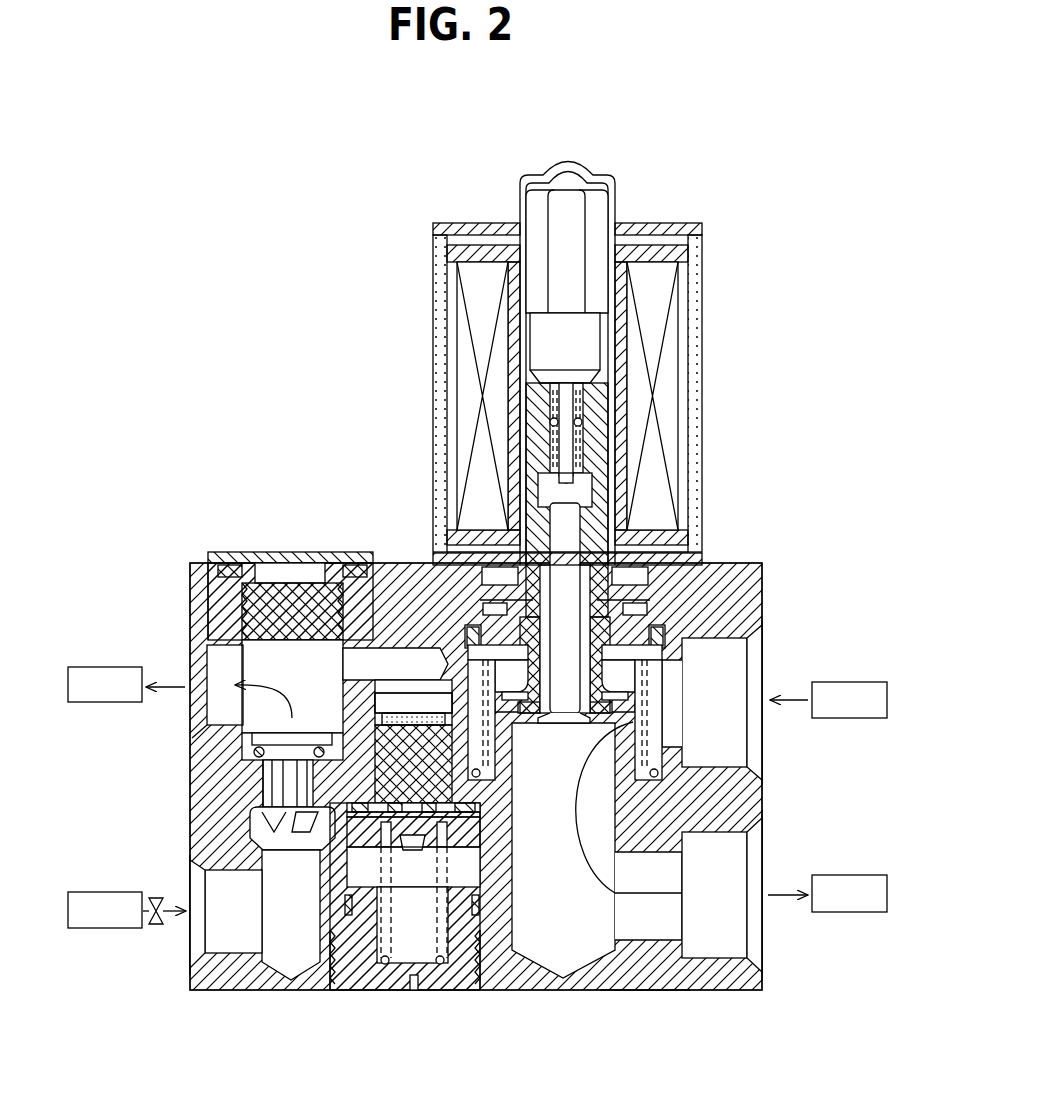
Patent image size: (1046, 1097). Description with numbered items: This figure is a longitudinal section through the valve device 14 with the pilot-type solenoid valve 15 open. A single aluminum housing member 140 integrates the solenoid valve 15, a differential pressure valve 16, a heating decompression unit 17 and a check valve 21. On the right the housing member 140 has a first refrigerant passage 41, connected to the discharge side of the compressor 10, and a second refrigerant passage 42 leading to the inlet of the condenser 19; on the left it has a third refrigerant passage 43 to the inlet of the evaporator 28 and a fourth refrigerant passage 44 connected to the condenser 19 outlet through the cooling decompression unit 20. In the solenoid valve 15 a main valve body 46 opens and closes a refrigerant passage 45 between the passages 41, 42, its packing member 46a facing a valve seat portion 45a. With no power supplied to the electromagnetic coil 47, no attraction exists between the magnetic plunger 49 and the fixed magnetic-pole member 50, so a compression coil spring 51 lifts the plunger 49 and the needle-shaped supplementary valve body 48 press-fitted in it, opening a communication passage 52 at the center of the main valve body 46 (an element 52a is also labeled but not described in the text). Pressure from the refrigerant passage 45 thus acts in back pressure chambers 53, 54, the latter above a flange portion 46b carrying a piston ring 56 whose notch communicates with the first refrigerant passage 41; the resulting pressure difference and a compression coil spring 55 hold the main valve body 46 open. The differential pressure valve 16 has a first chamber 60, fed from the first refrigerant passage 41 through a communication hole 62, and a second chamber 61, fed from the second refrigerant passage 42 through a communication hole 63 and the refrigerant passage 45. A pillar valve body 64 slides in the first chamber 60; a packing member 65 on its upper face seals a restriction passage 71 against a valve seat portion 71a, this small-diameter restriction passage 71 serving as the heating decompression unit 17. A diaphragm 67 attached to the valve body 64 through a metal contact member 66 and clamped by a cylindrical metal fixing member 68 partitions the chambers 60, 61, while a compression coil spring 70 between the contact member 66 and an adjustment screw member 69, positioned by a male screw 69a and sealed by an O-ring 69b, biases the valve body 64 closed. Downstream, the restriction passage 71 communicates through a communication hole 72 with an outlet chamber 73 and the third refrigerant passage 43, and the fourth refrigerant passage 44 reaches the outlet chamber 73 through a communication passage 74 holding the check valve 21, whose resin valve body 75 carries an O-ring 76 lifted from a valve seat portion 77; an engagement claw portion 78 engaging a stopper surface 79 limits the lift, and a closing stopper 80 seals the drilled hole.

The compressor 10 is at (850, 720).
The valve device 14 is at (710, 995).
The pilot-type solenoid valve 15 is at (510, 202).
The differential pressure valve 16 is at (412, 960).
The heating decompression unit 17 is at (395, 568).
The condenser 19 is at (850, 913).
The cooling decompression unit 20 is at (157, 926).
The check valve 21 is at (245, 782).
The evaporator 28 is at (120, 666).
The first refrigerant passage 41 is at (700, 740).
The second refrigerant passage 42 is at (740, 945).
The third refrigerant passage 43 is at (205, 700).
The fourth refrigerant passage 44 is at (222, 968).
The refrigerant passage 45 is at (563, 868).
The valve seat portion 45a is at (640, 770).
The main valve body 46 is at (600, 690).
The packing member 46a is at (650, 715).
The flange portion 46b is at (640, 610).
The electromagnetic coil 47 is at (690, 325).
The supplementary valve body 48 is at (550, 478).
The magnetic plunger 49 is at (590, 348).
The fixed magnetic-pole member 50 is at (595, 450).
The compression coil spring 51 is at (600, 412).
The communication passage 52 is at (575, 520).
The pin 52a is at (560, 442).
The back pressure chamber 53 is at (560, 440).
The back pressure chamber 54 is at (640, 575).
The compression coil spring 55 is at (620, 690).
The piston ring 56 is at (640, 640).
The first chamber 60 is at (353, 665).
The second chamber 61 is at (292, 975).
The communication hole 62 is at (420, 760).
The communication hole 63 is at (502, 965).
The pillar valve body 64 is at (543, 833).
The packing member 65 is at (253, 668).
The metal contact member 66 is at (360, 965).
The diaphragm 67 is at (348, 975).
The metal fixing member 68 is at (467, 965).
The adjustment screw member 69 is at (378, 965).
The male screw 69a is at (340, 975).
The O-ring 69b is at (490, 960).
The compression coil spring 70 is at (412, 990).
The restriction passage 71 is at (400, 700).
The valve seat portion 71a is at (410, 718).
The communication hole 72 is at (300, 620).
The outlet chamber 73 is at (220, 663).
The communication passage 74 is at (262, 838).
The valve body 75 is at (240, 700).
The O-ring 76 is at (255, 705).
The valve seat portion 77 is at (250, 760).
The engagement claw portion 78 is at (255, 815).
The stopper surface 79 is at (265, 797).
The closing stopper 80 is at (238, 600).
The housing member 140 is at (640, 975).